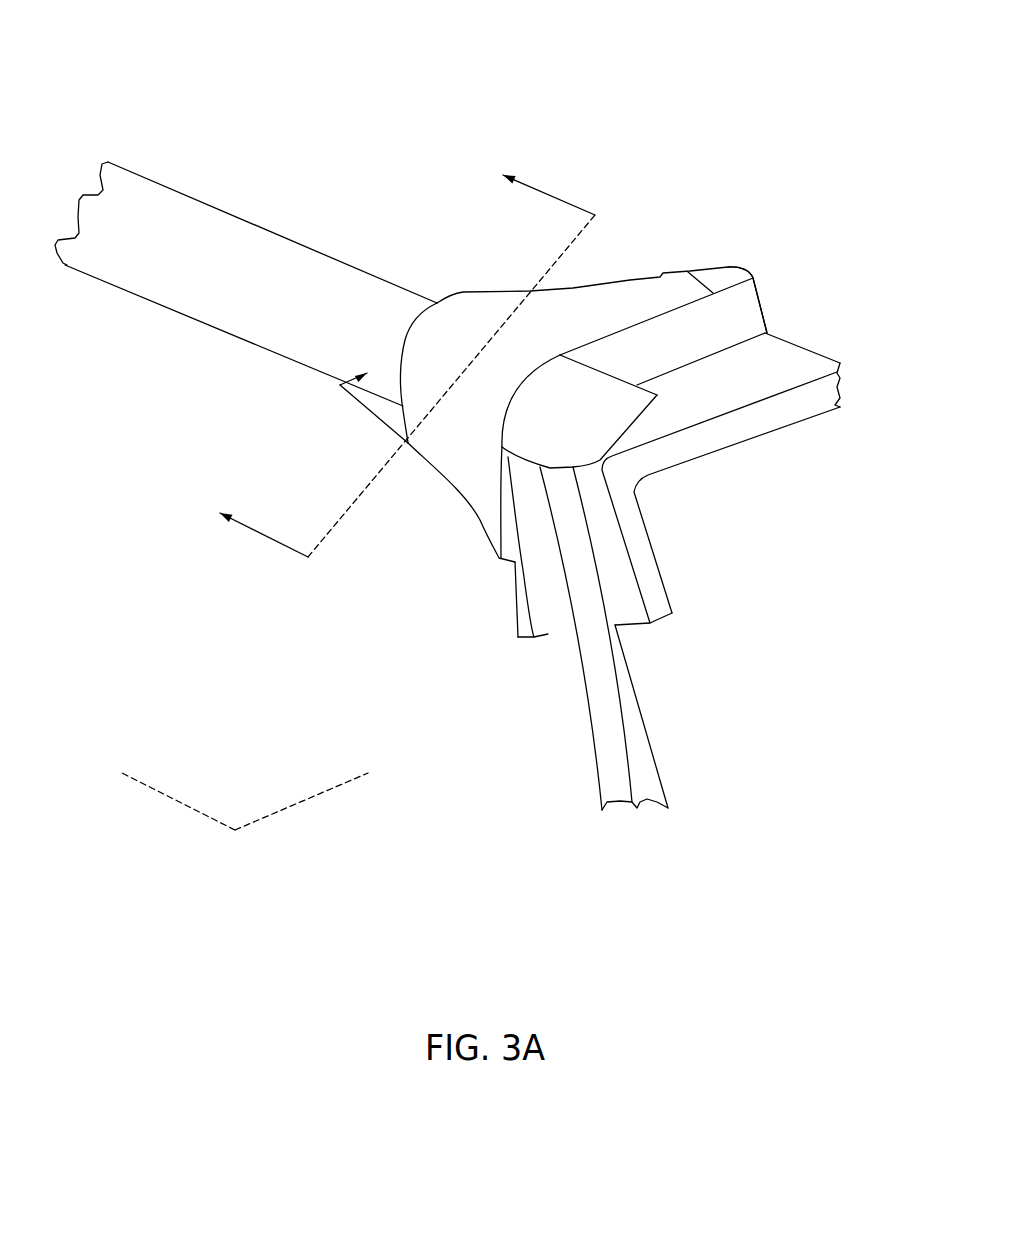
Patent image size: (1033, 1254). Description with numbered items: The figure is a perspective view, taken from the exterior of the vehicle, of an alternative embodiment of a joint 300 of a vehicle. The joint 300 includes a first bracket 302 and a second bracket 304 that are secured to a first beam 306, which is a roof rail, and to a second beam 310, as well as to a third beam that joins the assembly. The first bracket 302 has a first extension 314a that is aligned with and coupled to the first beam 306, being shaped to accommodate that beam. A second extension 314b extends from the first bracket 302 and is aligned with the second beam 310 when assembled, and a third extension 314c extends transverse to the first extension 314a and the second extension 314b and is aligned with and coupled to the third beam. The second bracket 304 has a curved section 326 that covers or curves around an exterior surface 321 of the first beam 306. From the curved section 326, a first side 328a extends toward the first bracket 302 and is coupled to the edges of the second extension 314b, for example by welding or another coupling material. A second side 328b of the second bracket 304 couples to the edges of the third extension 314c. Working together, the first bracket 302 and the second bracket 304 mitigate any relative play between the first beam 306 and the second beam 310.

The joint 300 is at (535, 67).
The first bracket 302 is at (783, 362).
The second bracket 304 is at (573, 290).
The first beam 306 is at (258, 226).
The second beam 310 is at (657, 760).
The first extension 314a is at (375, 424).
The second extension 314b is at (548, 634).
The third extension 314c is at (757, 283).
The exterior surface 321 is at (340, 385).
The curved section 326 is at (405, 338).
The first side 328a is at (485, 533).
The second side 328b is at (665, 272).